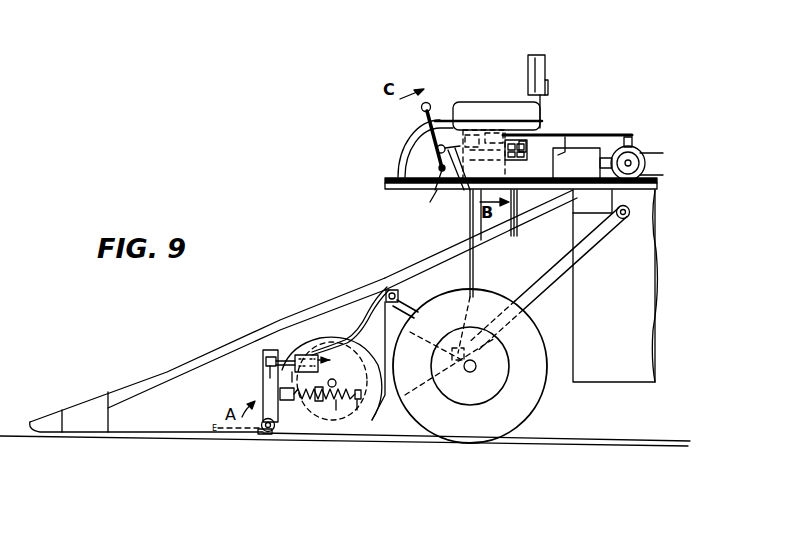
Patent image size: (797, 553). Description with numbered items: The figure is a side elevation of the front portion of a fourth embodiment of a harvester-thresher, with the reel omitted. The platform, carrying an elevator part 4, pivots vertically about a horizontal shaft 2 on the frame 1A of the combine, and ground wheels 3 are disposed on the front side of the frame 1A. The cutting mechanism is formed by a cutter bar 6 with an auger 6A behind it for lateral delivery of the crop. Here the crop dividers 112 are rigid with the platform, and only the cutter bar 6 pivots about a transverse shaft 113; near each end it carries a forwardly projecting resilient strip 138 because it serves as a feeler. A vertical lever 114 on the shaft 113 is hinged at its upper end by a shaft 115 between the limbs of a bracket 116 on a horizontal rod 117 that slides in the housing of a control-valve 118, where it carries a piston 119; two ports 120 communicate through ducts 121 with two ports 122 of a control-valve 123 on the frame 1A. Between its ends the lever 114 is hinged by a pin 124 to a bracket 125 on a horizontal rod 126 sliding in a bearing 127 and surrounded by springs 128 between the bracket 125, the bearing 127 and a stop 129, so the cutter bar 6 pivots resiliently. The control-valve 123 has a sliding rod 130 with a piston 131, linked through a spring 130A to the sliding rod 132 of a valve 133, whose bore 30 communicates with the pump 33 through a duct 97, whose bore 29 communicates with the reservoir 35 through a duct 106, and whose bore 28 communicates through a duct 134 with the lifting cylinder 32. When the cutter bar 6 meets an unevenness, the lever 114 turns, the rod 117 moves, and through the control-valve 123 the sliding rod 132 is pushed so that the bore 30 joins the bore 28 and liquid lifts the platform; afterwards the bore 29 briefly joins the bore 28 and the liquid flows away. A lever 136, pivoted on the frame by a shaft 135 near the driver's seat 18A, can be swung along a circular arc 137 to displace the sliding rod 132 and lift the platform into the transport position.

The frame 1A is at (657, 277).
The horizontal shaft 2 is at (619, 236).
The ground wheels 3 is at (530, 347).
The elevator part 4 is at (456, 275).
The cutter bar 6 is at (195, 428).
The auger 6A is at (392, 372).
The driver's seat 18A is at (542, 55).
The bore 28 is at (460, 188).
The bore 29 is at (450, 119).
The bore 30 is at (479, 106).
The lifting cylinder 32 is at (450, 363).
The supplemental pump 33 is at (641, 151).
The supplemental tank 35 is at (590, 132).
The duct 97 is at (621, 135).
The duct 106 is at (565, 136).
The crop dividers 112 is at (166, 372).
The horizontal shaft 113 is at (267, 437).
The lever 114 is at (263, 385).
The shaft 115 is at (266, 357).
The bracket 116 is at (272, 350).
The horizontal rod 117 is at (290, 350).
The control-valve 118 is at (345, 352).
The piston 119 is at (265, 370).
The ports 120 is at (310, 347).
The ducts 121 is at (511, 226).
The ports 122 is at (530, 159).
The control-valve 123 is at (537, 141).
The pin 124 is at (258, 433).
The bracket 125 is at (282, 407).
The horizontal rod 126 is at (357, 407).
The bearing 127 is at (337, 407).
The springs 128 is at (298, 407).
The stop 129 is at (382, 410).
The sliding rod 130 is at (582, 165).
The spring 130A is at (487, 155).
The piston 131 is at (528, 101).
The sliding rod 132 is at (432, 152).
The control-valve 133 is at (430, 202).
The duct 134 is at (477, 205).
The shaft 135 is at (428, 190).
The lever 136 is at (430, 101).
The circular arc 137 is at (421, 127).
The resilient strip 138 is at (233, 438).